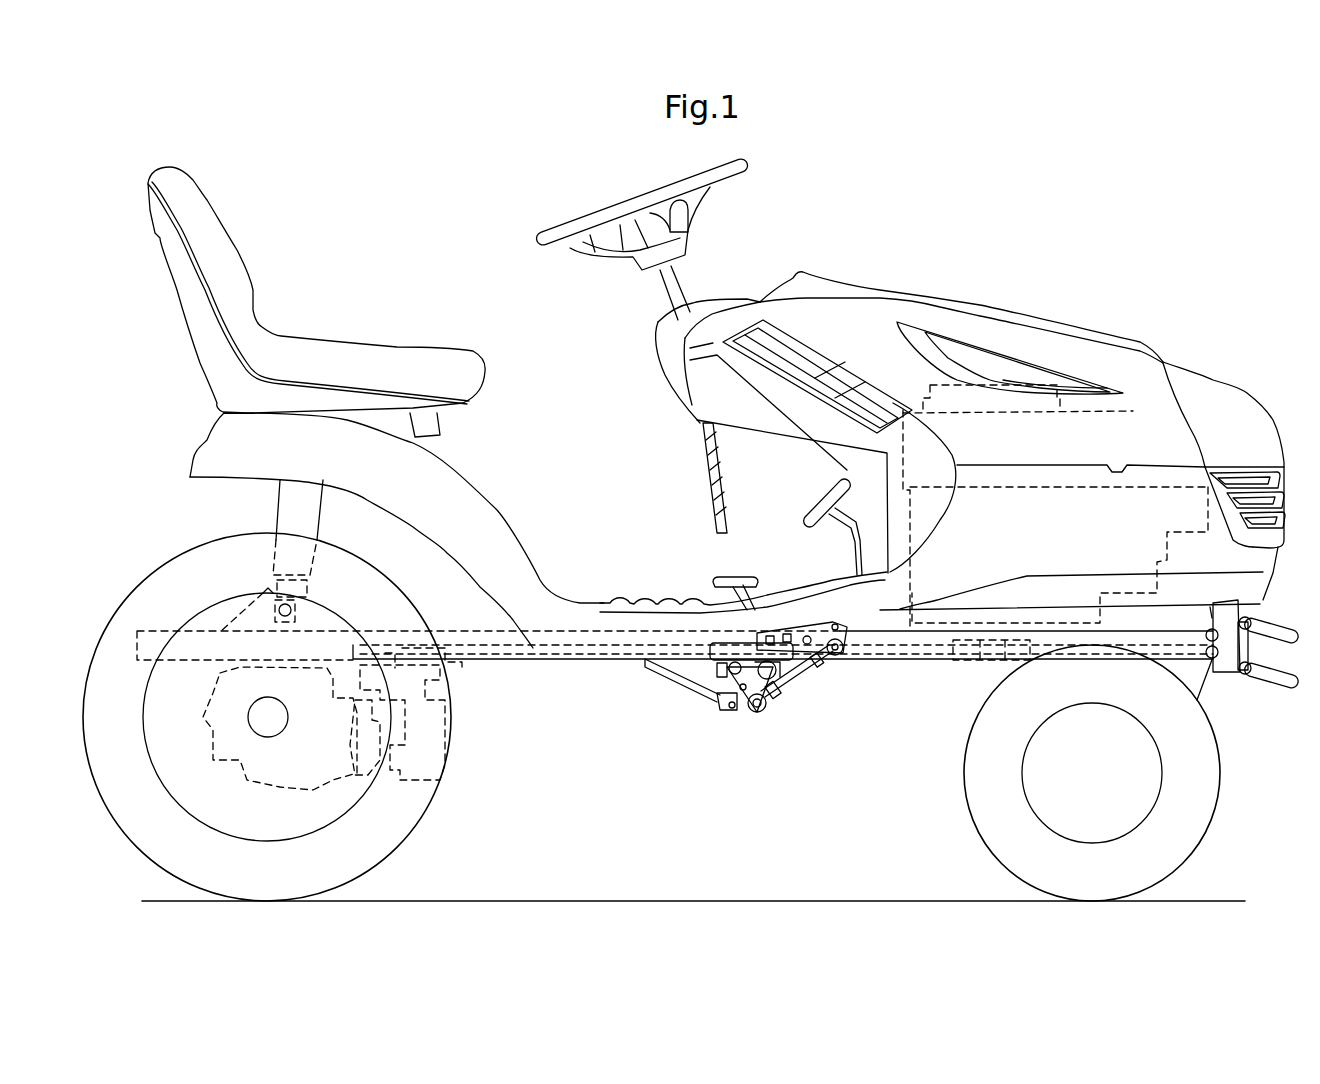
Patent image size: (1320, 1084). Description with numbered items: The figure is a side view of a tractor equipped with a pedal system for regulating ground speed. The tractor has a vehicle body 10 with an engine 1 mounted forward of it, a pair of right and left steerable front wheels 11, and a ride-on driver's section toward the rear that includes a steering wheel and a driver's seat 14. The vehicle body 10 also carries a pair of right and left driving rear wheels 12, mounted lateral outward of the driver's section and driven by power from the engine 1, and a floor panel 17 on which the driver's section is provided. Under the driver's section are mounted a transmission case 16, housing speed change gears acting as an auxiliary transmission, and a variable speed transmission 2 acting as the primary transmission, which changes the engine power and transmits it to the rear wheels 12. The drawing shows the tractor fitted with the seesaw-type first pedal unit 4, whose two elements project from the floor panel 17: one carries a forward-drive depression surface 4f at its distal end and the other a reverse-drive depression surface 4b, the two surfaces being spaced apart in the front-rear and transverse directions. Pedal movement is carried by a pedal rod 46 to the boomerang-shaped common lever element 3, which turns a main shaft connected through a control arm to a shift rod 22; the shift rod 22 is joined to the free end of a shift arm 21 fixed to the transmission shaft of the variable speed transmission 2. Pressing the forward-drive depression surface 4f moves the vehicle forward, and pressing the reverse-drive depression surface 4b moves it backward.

The engine 1 is at (1218, 467).
The variable speed transmission 2 is at (410, 780).
The common lever element 3 is at (747, 709).
The first pedal unit 4 is at (829, 498).
The forward-drive depression surface 4f is at (808, 512).
The reverse-drive depression surface 4b is at (742, 578).
The vehicle body 10 is at (875, 684).
The front wheels 11 is at (1218, 818).
The rear wheels 12 is at (160, 857).
The driver's seat 14 is at (325, 338).
The transmission case 16 is at (229, 710).
The floor panel 17 is at (632, 598).
The shift arm 21 is at (412, 748).
The shift rod 22 is at (667, 675).
The pedal rod 46 is at (805, 684).